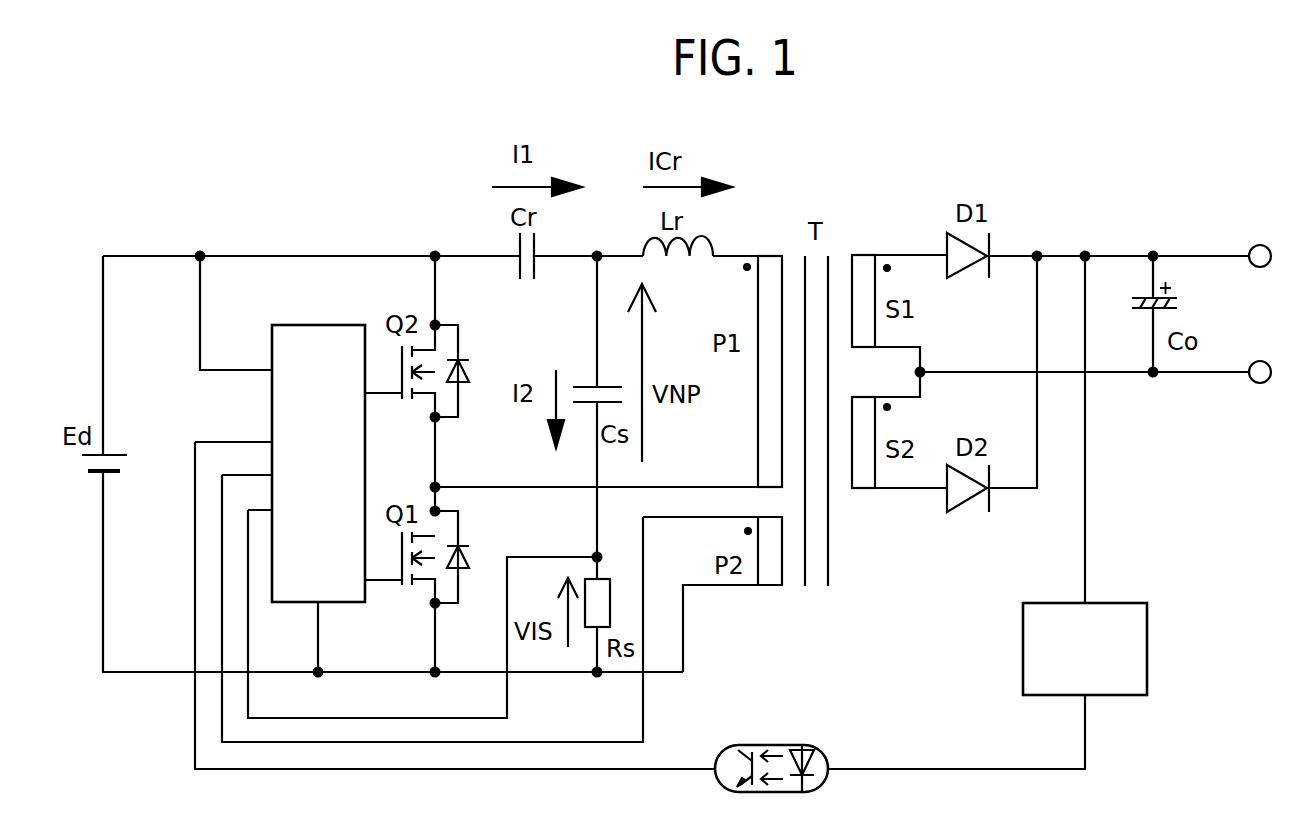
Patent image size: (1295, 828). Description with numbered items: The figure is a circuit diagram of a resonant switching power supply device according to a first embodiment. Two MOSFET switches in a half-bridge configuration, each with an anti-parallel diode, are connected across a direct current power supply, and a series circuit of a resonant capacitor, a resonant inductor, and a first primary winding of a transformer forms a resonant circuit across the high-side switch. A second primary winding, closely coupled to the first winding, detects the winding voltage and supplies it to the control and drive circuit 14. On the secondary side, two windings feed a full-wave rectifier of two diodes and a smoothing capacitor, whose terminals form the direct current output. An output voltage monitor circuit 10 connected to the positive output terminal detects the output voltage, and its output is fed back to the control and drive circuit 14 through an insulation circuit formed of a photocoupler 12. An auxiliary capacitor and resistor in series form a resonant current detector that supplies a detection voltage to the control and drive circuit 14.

The output voltage monitor circuit 10 is at (1108, 603).
The photocoupler 12 is at (780, 745).
The control and drive circuit 14 is at (322, 325).